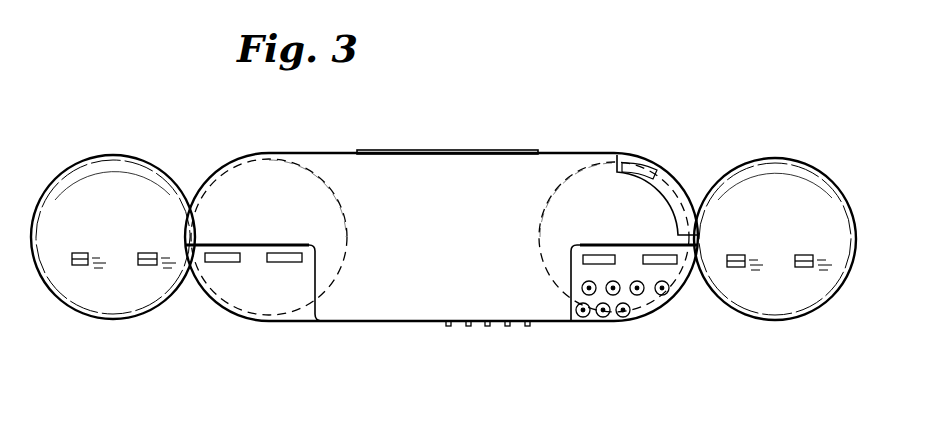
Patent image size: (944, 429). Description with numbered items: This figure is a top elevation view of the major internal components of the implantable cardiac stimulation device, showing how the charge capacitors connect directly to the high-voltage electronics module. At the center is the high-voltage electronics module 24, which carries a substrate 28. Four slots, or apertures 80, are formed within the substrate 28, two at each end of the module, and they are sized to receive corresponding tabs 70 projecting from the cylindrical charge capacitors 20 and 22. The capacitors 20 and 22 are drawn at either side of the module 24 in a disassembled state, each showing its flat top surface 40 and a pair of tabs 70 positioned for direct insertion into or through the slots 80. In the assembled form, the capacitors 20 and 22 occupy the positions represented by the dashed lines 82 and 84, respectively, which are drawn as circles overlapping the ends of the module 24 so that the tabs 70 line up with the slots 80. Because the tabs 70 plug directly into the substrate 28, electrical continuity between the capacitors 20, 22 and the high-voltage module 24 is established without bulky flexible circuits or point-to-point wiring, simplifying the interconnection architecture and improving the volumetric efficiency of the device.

The charge capacitor 20 is at (553, 285).
The charge capacitor 22 is at (327, 290).
The high-voltage electronics module 24 is at (592, 149).
The substrate 28 is at (664, 308).
The flat top surface 40 is at (147, 185).
The tabs 70 is at (141, 266).
The slots 80 is at (283, 263).
The dashed lines 82 is at (558, 192).
The dashed lines 84 is at (328, 198).